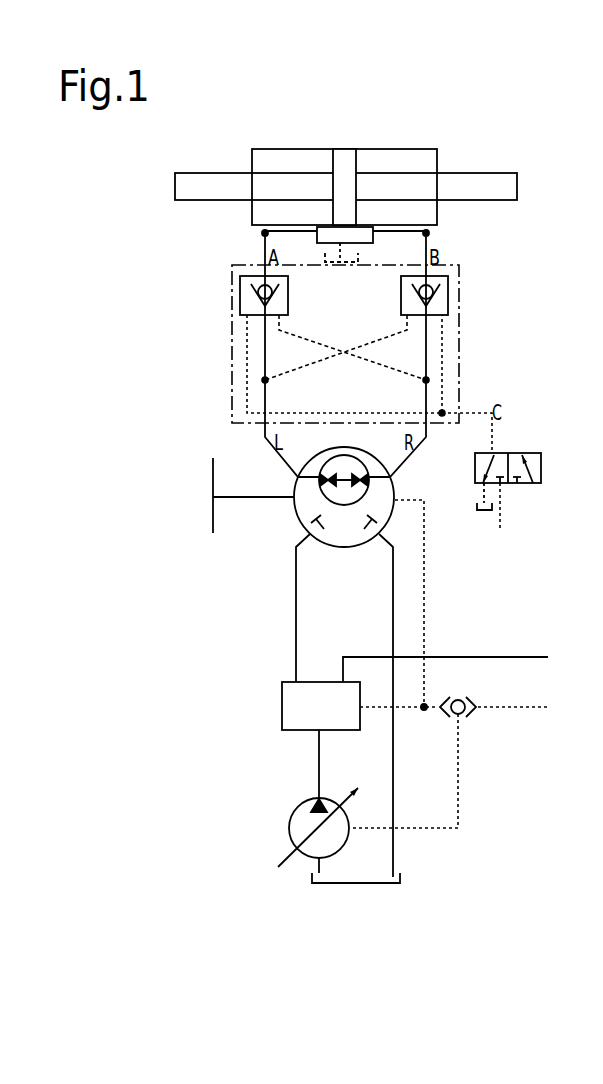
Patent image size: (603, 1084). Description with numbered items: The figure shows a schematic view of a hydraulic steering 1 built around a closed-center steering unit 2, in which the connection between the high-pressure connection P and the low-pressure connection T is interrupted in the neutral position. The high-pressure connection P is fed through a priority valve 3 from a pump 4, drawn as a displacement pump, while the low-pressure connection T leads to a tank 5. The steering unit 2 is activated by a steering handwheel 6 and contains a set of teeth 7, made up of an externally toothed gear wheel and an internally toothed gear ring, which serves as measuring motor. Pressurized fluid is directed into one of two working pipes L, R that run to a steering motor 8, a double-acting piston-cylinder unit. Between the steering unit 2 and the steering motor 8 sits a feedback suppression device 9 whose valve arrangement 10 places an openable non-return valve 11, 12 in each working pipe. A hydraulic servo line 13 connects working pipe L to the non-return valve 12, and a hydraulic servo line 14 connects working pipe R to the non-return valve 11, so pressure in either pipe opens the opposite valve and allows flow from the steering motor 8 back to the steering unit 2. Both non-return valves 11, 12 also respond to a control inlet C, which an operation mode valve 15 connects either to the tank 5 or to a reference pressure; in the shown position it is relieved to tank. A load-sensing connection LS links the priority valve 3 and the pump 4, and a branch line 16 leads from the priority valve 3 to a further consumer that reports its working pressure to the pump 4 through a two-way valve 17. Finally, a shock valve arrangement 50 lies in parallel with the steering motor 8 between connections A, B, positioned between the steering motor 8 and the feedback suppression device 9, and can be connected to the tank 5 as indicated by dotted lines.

The steering 1 is at (510, 132).
The steering unit 2 is at (298, 515).
The priority valve 3 is at (289, 700).
The pump 4 is at (289, 822).
The tank 5 is at (392, 893).
The steering handwheel 6 is at (212, 467).
The set of teeth 7 is at (367, 495).
The steering motor 8 is at (400, 149).
The feedback suppression device 9 is at (518, 348).
The valve arrangement 10 is at (459, 355).
The non-return valve 11 is at (240, 300).
The non-return valve 12 is at (448, 285).
The hydraulic servo line 13 is at (310, 366).
The hydraulic servo line 14 is at (385, 367).
The operation mode valve 15 is at (541, 470).
The branch line 16 is at (497, 657).
The two-way valve 17 is at (464, 718).
The shock valve arrangement 50 is at (265, 233).